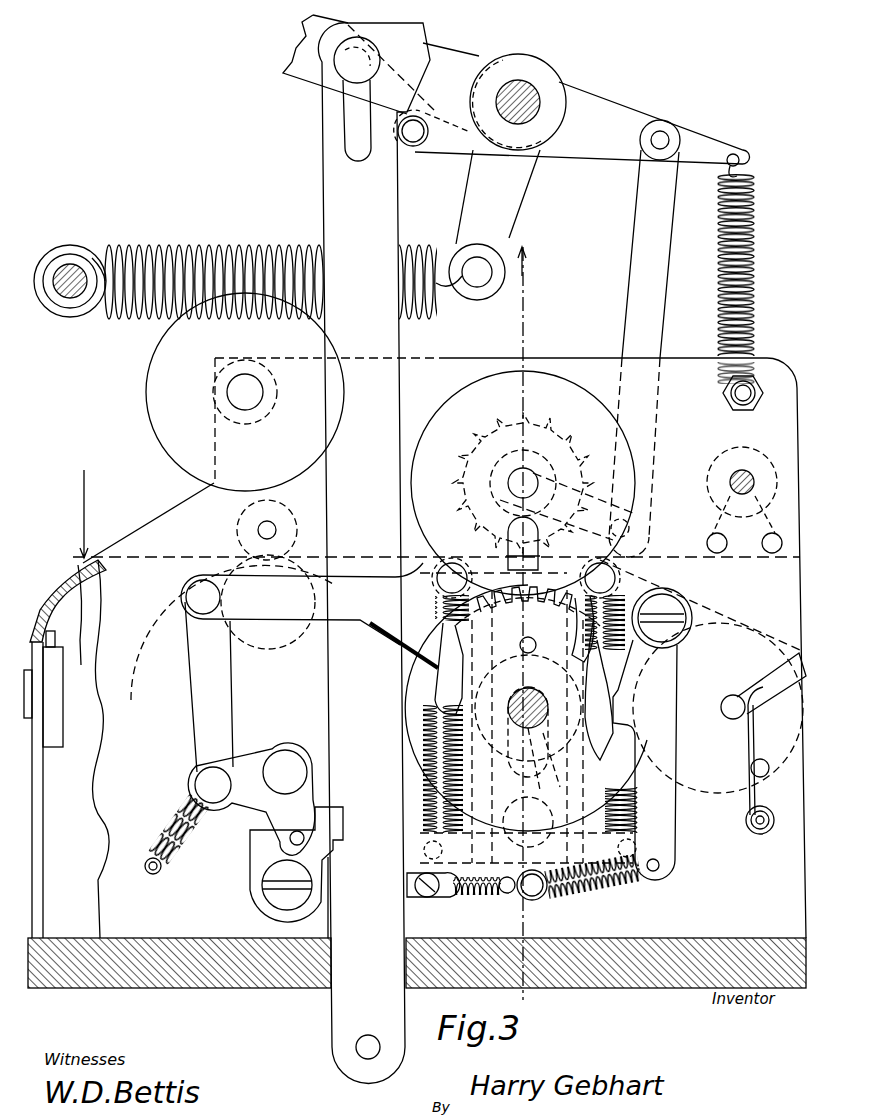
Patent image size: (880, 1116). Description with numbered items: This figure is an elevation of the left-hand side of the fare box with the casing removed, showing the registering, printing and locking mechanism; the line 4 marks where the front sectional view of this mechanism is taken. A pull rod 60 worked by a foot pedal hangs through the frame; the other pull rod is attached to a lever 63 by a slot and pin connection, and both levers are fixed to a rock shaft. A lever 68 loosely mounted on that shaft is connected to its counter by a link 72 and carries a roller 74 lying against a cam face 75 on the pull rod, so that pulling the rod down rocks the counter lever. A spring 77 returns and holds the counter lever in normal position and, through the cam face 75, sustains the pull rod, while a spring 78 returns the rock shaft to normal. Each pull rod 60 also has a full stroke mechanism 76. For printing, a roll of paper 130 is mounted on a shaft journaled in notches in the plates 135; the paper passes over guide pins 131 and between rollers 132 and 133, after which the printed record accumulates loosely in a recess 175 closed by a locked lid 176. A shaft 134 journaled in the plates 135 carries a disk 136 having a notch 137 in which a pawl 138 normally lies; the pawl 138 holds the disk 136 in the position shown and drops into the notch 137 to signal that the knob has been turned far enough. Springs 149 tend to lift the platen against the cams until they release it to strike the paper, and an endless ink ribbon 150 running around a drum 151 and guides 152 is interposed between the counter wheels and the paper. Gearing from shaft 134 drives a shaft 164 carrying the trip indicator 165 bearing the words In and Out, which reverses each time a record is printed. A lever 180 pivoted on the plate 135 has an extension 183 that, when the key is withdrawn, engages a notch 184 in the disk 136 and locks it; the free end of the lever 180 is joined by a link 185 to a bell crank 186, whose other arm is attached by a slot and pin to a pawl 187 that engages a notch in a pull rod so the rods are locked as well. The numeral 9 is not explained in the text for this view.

The section line 4— 4 is at (529, 619).
The section line 9 is at (81, 503).
The pull rod 60 is at (337, 178).
The lever 63 is at (293, 70).
The lever 68 is at (597, 143).
The link 72 is at (640, 275).
The roller 74 is at (440, 152).
The cam face 75 is at (422, 77).
The full stroke mechanism 76 is at (413, 893).
The spring 77 is at (749, 281).
The spring 78 is at (201, 246).
The roll of paper 130 is at (767, 639).
The guide pin 131 is at (406, 554).
The roller 132 is at (258, 634).
The roller 133 is at (245, 530).
The shaft 134 is at (534, 690).
The plate 135 is at (114, 749).
The disk 136 is at (600, 763).
The notch 137 is at (593, 710).
The pawl 138 is at (620, 707).
The spring 149 is at (414, 767).
The ink ribbon 150 is at (652, 536).
The drum 151 is at (738, 454).
The guide 152 is at (466, 492).
The shaft 164 is at (230, 397).
The trip indicator 165 is at (173, 372).
The recess 175 is at (94, 565).
The lid 176 is at (41, 757).
The lever 180 is at (258, 612).
The extension 183 is at (430, 667).
The notch 184 is at (448, 645).
The link 185 is at (202, 683).
The bell crank 186 is at (243, 770).
The pawl 187 is at (335, 827).